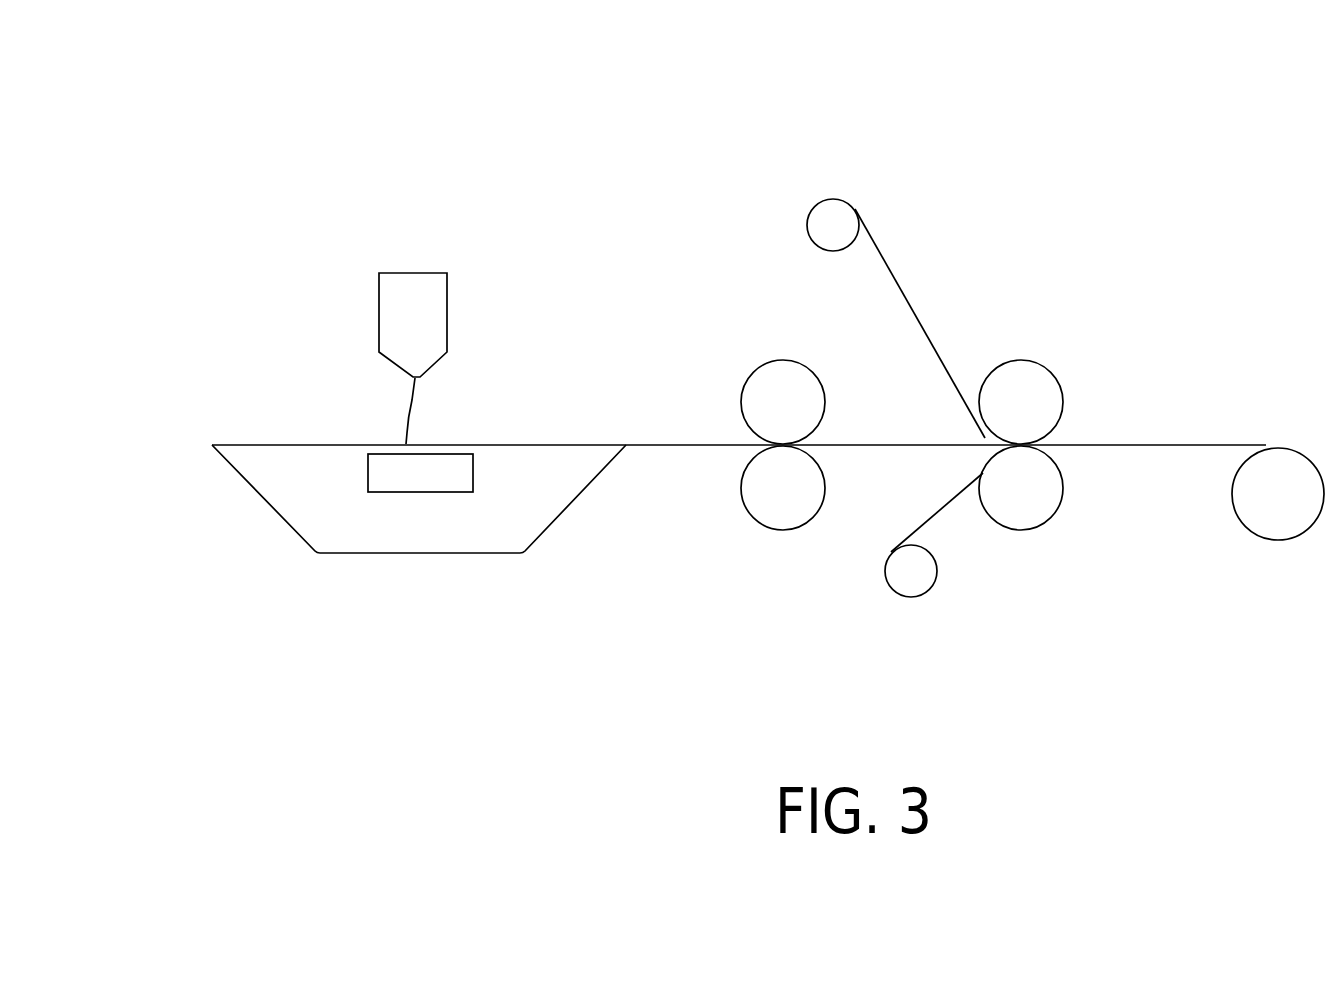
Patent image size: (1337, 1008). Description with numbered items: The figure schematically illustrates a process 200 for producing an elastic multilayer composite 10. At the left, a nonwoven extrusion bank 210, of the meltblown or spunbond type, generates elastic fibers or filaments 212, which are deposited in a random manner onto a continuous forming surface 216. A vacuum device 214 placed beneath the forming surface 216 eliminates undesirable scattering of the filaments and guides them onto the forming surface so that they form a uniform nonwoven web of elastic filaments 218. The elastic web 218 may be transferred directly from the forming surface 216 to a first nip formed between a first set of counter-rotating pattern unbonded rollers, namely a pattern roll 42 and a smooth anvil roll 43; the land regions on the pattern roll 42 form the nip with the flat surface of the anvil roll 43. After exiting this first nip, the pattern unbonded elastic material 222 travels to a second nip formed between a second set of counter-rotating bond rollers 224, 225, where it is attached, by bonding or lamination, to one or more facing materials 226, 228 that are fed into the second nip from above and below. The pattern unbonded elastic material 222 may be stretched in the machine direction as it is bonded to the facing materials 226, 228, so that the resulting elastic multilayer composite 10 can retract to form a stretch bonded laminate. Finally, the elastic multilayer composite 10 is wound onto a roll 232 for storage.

The process 200 is at (579, 250).
The extrusion bank 210 is at (403, 272).
The elastic fibers or filaments 212 is at (396, 399).
The vacuum device 214 is at (417, 492).
The forming surface 216 is at (403, 553).
The nonwoven web of elastic filaments 218 is at (661, 445).
The anvil roll 43 is at (792, 358).
The pattern roll 42 is at (757, 522).
The pattern unbonded elastic material 222 is at (903, 445).
The bond roller 225 is at (1050, 373).
The bond roller 224 is at (1063, 507).
The facing material 226 is at (822, 203).
The facing material 228 is at (935, 587).
The roll 232 is at (1275, 443).
The elastic multilayer composite 10 is at (1147, 440).